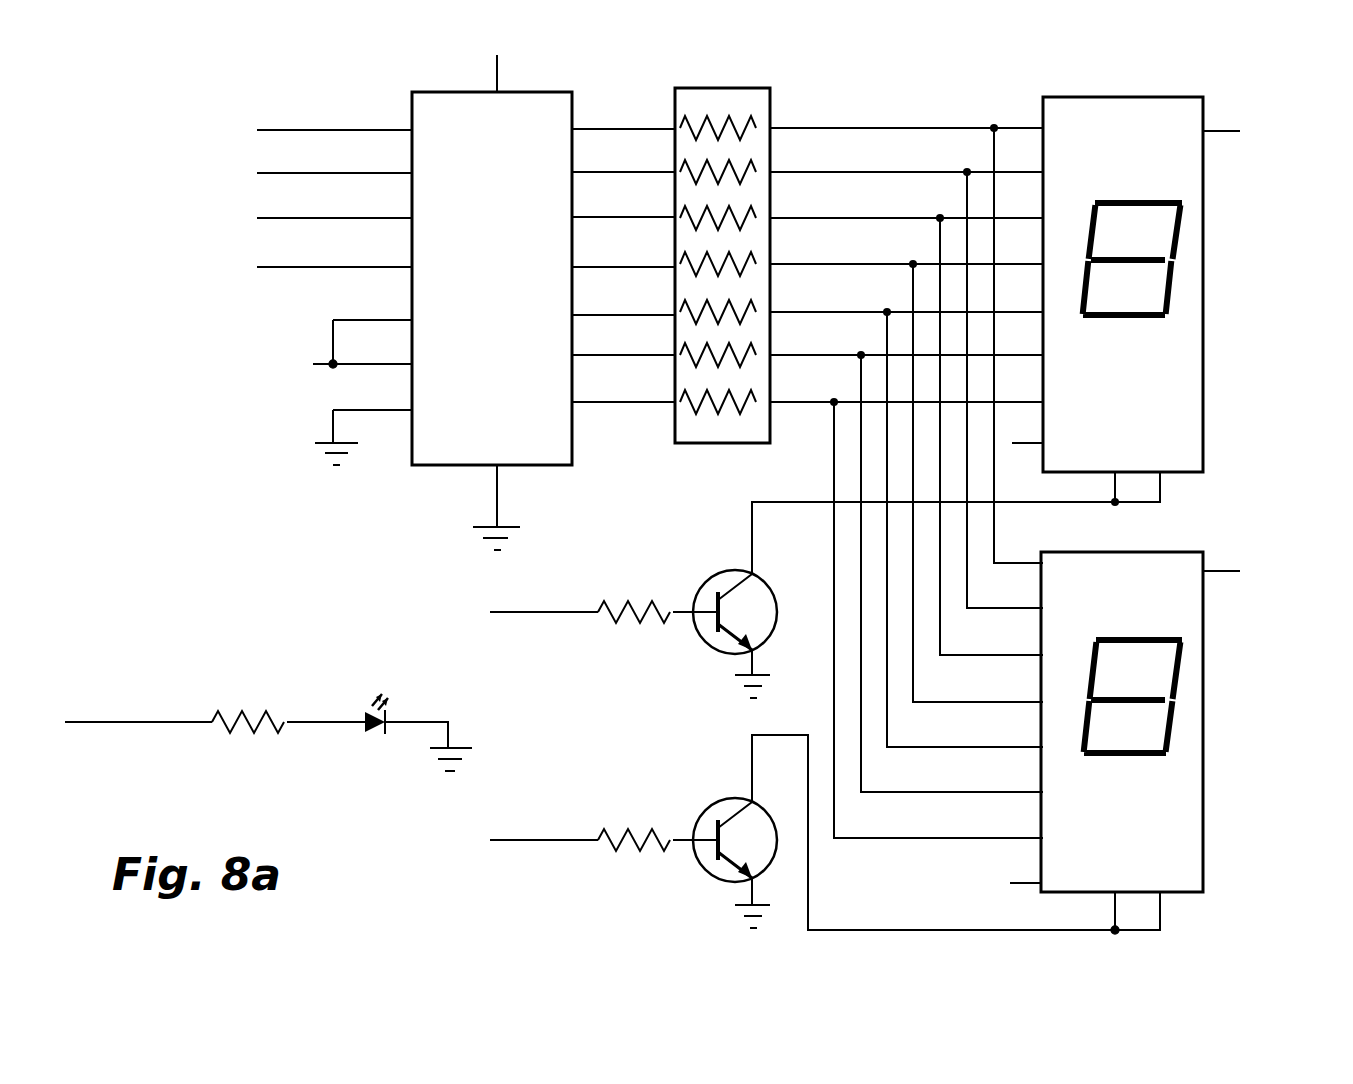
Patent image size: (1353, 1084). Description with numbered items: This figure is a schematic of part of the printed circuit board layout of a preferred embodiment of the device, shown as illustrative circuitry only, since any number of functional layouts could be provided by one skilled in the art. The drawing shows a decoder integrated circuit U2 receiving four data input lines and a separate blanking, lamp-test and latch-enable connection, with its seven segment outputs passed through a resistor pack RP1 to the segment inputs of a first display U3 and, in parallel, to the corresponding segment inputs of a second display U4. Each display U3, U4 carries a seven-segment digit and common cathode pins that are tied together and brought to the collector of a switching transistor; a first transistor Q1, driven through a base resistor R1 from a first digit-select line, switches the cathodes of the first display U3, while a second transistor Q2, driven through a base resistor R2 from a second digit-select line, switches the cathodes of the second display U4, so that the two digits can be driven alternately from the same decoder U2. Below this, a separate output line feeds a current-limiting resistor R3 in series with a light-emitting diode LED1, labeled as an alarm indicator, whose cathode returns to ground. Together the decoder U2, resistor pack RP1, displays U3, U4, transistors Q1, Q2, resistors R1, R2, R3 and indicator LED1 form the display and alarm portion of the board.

The BCD to seven-segment decoder MC74HC4511D U2 is at (466, 299).
The resistor pack 1.2K 767-143-R1.2K RP1 is at (846, 266).
The right display MAN4940A U3 is at (1079, 452).
The right display MAN4940A U4 is at (1169, 726).
The transistor 2N3904 Q1 is at (884, 600).
The transistor 2N3904 Q2 is at (884, 832).
The resistor 1K R1 is at (580, 610).
The resistor 1K R2 is at (580, 839).
The resistor 1.2K R3 is at (215, 710).
The alarm LED HLMPJ100 LED1 is at (391, 724).